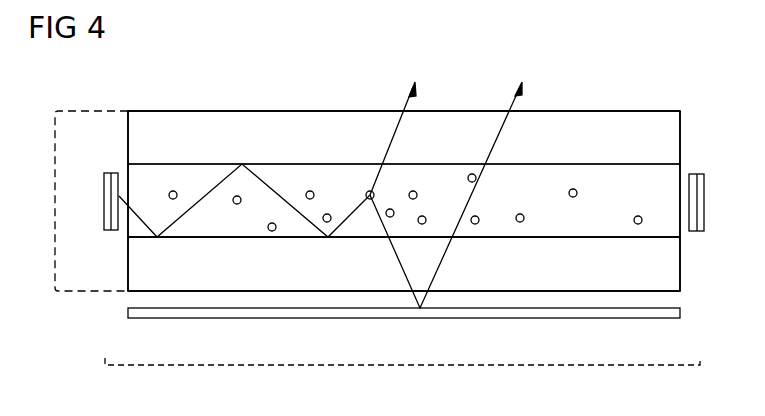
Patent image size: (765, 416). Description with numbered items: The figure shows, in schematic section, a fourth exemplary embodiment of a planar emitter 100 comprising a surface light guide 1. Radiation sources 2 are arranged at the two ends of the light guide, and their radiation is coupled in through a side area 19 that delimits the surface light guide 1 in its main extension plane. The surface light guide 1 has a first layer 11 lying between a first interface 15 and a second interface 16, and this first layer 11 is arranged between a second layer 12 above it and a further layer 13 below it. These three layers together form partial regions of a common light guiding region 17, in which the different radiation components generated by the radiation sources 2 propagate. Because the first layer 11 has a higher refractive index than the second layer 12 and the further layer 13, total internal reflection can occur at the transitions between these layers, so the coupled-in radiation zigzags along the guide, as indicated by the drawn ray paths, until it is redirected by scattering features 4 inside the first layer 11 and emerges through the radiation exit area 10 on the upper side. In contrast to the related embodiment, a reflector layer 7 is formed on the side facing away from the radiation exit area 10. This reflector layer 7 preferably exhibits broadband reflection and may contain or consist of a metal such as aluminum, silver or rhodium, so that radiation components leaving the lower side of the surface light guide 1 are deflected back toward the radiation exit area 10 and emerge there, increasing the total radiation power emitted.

The surface light guide 1 is at (646, 84).
The radiation source 2 is at (103, 206).
The scattering particles 4 is at (315, 196).
The reflector layer 7 is at (682, 315).
The radiation exit area 10 is at (553, 113).
The first layer 11 is at (673, 228).
The second layer 12 is at (309, 119).
The further layer 13 is at (672, 271).
The first interface 15 is at (206, 113).
The second interface 16 is at (135, 289).
The light guiding region 17 is at (55, 192).
The side area 19 is at (127, 128).
The planar emitter 100 is at (408, 365).